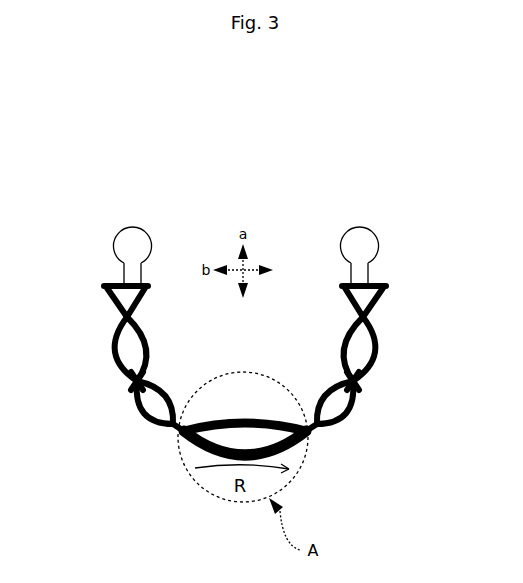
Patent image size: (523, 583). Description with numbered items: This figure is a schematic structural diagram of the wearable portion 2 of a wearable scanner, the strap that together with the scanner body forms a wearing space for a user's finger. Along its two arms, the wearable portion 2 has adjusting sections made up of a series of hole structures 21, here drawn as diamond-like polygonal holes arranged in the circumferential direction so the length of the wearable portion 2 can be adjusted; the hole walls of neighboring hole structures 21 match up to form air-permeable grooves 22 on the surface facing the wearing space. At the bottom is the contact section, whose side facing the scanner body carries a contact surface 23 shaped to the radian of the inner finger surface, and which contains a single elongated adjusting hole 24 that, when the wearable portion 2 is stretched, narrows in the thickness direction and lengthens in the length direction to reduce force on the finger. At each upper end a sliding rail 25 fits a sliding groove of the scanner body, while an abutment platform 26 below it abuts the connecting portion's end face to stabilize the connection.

The wearable portion 2 is at (243, 320).
The hole structure 21 is at (117, 366).
The air-permeable groove 22 is at (140, 376).
The contact surface 23 is at (244, 420).
The adjusting hole 24 is at (285, 436).
The sliding rail 25 is at (121, 250).
The abutment platform 26 is at (105, 293).